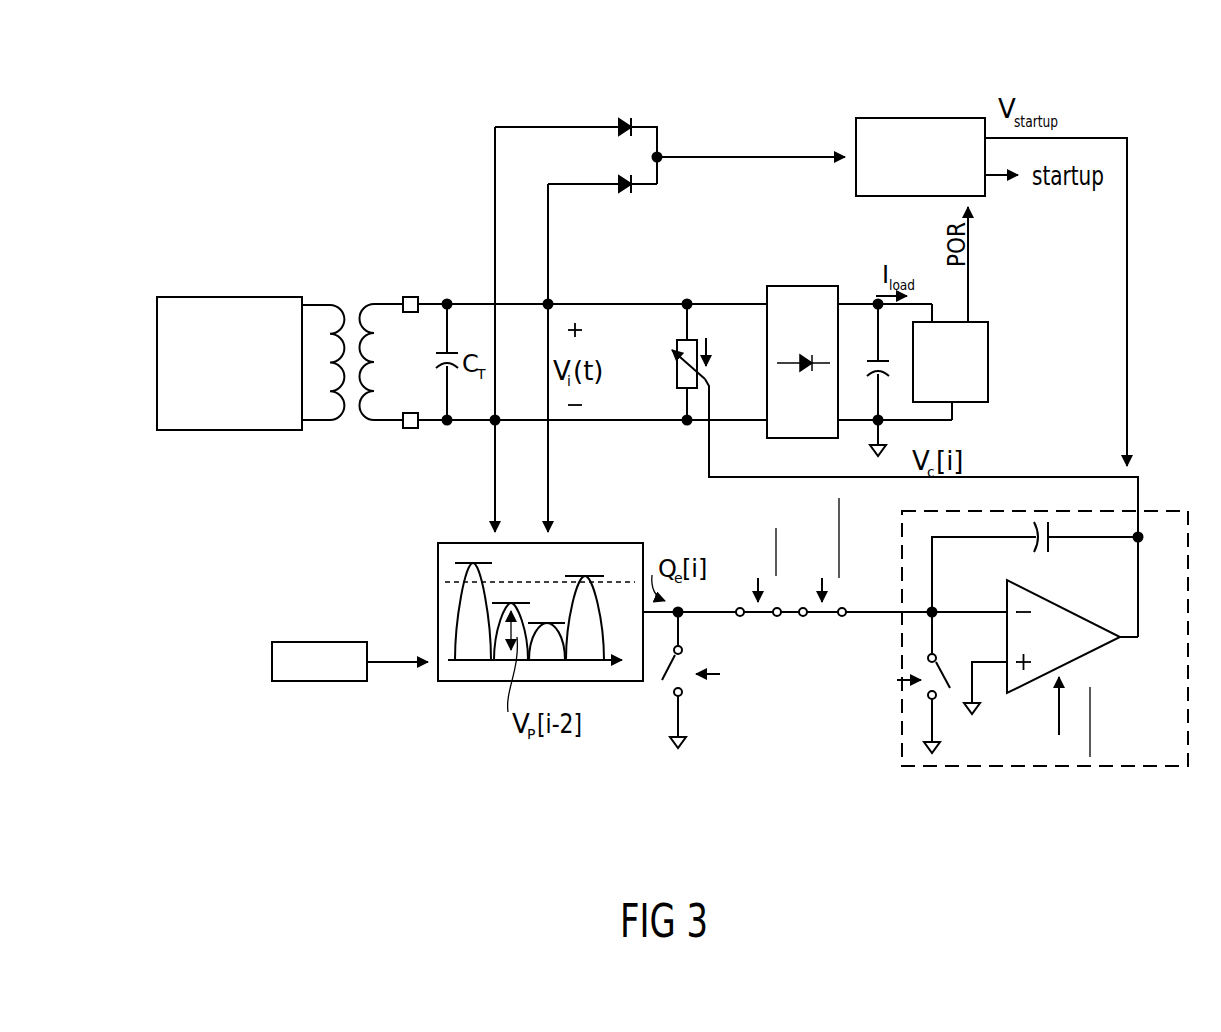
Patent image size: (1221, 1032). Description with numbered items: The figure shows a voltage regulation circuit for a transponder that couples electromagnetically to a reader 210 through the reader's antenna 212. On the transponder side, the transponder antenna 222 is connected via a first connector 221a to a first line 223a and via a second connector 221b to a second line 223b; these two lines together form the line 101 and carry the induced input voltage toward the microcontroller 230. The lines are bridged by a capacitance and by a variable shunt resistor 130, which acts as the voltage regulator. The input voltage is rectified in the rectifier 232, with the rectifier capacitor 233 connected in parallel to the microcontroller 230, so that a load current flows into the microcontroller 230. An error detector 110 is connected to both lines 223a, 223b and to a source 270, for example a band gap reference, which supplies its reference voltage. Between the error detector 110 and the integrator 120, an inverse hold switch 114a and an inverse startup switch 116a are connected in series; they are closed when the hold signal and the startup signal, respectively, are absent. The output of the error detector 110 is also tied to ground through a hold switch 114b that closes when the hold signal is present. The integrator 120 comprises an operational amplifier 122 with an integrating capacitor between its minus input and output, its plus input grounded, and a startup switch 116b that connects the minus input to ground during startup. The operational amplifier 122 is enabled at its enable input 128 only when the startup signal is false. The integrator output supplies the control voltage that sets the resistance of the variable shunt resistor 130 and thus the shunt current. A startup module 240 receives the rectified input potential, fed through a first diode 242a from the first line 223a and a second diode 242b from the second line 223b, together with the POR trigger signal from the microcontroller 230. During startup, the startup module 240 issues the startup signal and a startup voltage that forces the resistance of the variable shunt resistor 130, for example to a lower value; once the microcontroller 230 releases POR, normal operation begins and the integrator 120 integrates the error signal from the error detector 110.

The line 101 is at (506, 607).
The error detector 110 is at (468, 672).
The inverse hold switch 114a is at (758, 614).
The hold switch 114b is at (682, 680).
The inverse startup switch 116a is at (833, 607).
The startup switch 116b is at (940, 692).
The integrator 120 is at (1022, 619).
The operational amplifier 122 is at (1070, 628).
The enable input 128 is at (1087, 658).
The variable shunt resistor 130 is at (680, 342).
The reader 210 is at (220, 297).
The antenna 212 is at (323, 310).
The first connector 221a is at (405, 428).
The second connector 221b is at (412, 297).
The transponder antenna 222 is at (387, 310).
The first line 223a is at (468, 420).
The second line 223b is at (522, 305).
The microcontroller 230 is at (977, 328).
The rectifier 232 is at (817, 298).
The rectifier capacitor 233 is at (868, 350).
The startup module 240 is at (933, 127).
The first diode 242a is at (623, 124).
The second diode 242b is at (623, 178).
The source 270 is at (275, 672).